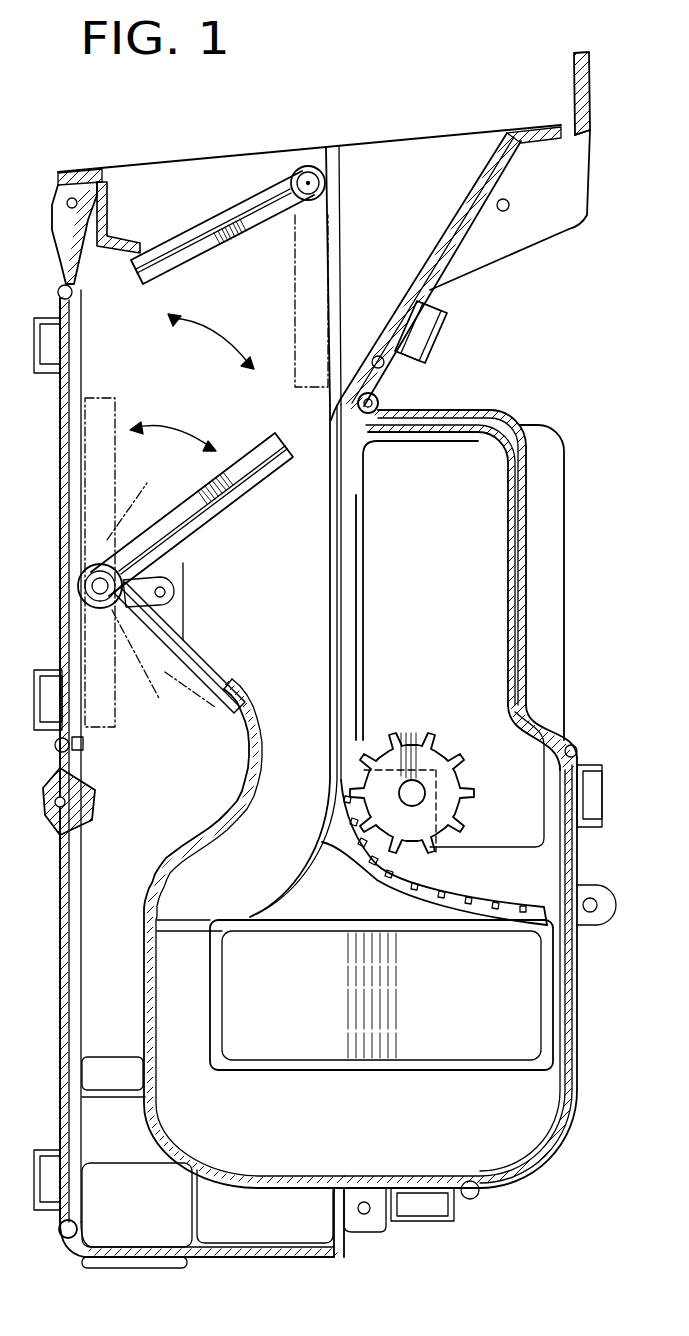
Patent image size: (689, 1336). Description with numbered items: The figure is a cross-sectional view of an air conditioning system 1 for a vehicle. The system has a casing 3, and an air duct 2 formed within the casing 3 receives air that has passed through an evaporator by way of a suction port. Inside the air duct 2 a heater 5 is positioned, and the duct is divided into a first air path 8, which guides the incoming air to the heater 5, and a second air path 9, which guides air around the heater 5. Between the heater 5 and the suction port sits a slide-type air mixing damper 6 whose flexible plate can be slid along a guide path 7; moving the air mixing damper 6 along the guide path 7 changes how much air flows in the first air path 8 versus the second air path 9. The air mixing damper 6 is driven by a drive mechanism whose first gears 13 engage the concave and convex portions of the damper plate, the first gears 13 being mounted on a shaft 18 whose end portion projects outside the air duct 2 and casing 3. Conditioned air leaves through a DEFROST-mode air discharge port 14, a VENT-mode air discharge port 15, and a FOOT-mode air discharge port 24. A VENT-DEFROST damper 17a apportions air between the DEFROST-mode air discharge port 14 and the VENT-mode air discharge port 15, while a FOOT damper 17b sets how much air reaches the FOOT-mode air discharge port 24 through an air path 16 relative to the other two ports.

The air conditioning system 1 is at (276, 134).
The air duct 2 is at (454, 525).
The casing 3 is at (488, 412).
The heater 5 is at (531, 1010).
The air mixing damper 6 is at (462, 906).
The guide path 7 is at (379, 670).
The first air path 8 is at (506, 883).
The second air path 9 is at (321, 654).
The first gears 13 is at (434, 740).
The DEFROST-mode air discharge port 14 is at (437, 162).
The VENT-mode air discharge port 15 is at (147, 190).
The air path 16 is at (143, 850).
The VENT-DEFROST damper 17a is at (297, 247).
The FOOT damper 17b is at (165, 527).
The shaft 18 is at (425, 788).
The FOOT-mode air discharge port 24 is at (122, 1222).